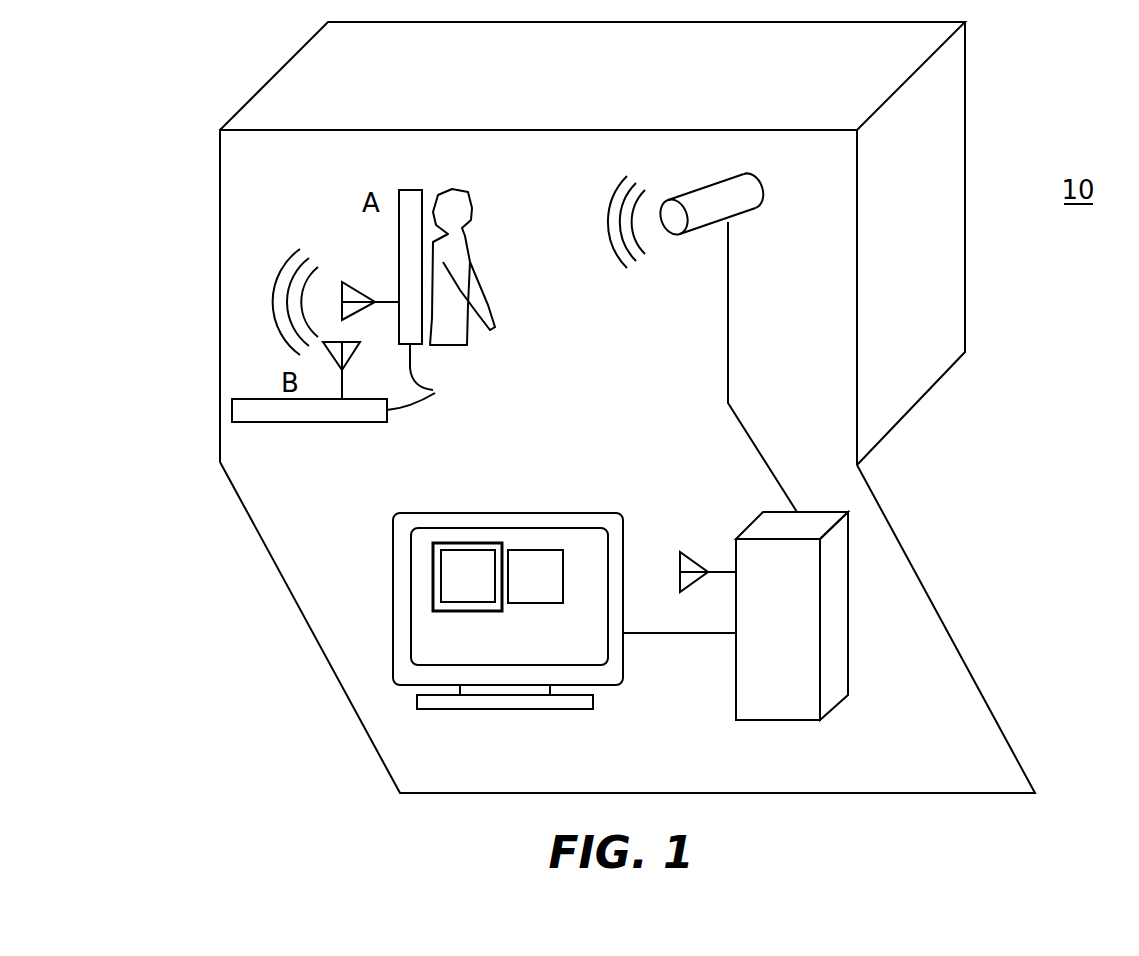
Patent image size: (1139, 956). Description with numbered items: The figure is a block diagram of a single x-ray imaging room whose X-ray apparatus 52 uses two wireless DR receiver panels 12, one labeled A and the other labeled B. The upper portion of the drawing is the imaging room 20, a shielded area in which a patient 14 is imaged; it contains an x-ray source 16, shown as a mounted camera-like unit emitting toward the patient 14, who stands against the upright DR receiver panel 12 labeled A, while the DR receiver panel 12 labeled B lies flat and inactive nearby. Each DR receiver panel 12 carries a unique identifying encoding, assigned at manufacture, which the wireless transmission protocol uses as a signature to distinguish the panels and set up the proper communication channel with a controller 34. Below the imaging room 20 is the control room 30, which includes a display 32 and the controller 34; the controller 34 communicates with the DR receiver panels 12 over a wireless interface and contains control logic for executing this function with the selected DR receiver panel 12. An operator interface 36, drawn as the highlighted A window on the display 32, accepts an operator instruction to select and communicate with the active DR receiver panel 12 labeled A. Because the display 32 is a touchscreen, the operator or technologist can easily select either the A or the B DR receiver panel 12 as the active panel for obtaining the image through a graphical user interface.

The DR receiver panel 12 is at (432, 377).
The patient 14 is at (472, 265).
The x-ray source 16 is at (757, 195).
The imaging room 20 is at (272, 76).
The control room 30 is at (270, 558).
The display 32 is at (567, 665).
The controller 34 is at (838, 668).
The operator interface 36 is at (433, 560).
The X-ray apparatus 52 is at (916, 481).